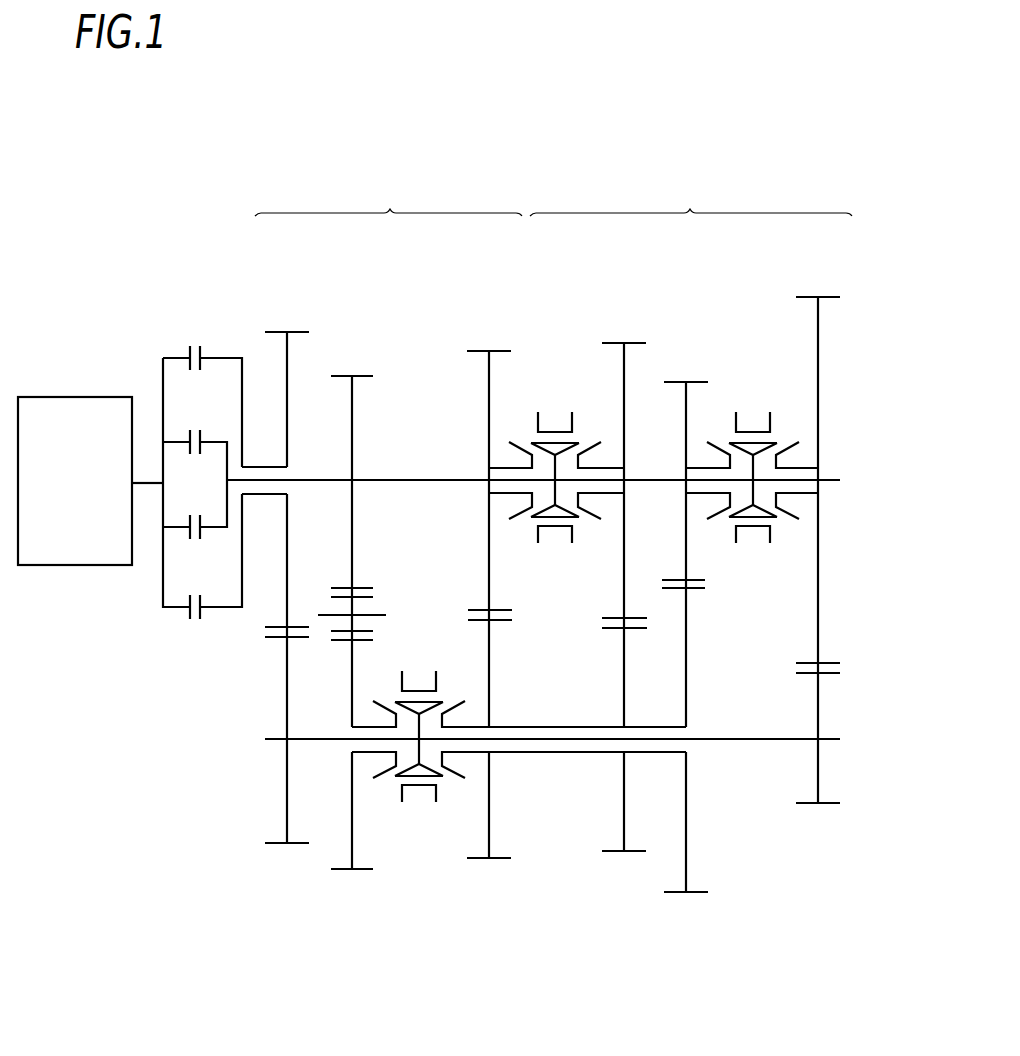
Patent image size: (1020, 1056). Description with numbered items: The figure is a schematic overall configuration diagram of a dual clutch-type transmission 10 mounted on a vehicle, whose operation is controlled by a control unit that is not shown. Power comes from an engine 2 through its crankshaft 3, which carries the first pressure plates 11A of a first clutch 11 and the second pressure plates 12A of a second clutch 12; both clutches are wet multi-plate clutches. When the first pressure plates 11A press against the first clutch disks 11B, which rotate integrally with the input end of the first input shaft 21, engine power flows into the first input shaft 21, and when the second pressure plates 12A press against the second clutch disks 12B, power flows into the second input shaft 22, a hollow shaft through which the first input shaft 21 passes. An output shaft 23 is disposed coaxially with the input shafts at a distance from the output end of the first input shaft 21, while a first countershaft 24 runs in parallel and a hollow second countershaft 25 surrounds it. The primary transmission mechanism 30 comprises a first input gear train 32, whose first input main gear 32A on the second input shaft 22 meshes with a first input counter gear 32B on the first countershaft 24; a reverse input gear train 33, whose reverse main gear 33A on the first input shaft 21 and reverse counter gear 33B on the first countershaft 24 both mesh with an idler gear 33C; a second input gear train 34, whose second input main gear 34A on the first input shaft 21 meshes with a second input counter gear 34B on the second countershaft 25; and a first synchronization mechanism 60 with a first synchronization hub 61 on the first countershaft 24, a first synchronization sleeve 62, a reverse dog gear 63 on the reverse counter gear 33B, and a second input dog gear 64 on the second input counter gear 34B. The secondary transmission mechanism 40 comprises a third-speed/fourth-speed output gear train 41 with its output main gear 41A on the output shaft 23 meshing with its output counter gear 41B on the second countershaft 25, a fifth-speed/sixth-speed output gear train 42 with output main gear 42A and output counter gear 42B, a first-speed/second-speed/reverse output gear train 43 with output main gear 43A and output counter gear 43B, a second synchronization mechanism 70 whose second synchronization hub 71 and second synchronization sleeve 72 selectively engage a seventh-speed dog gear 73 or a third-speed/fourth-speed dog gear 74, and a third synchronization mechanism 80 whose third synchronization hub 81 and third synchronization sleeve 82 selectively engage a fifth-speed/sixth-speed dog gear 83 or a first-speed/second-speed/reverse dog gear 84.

The dual clutch-type transmission 10 is at (546, 131).
The engine 2 is at (75, 481).
The crankshaft 3 is at (148, 478).
The first clutch 11 is at (199, 477).
The first pressure plates 11A is at (190, 449).
The first clutch disks 11B is at (201, 533).
The second clutch 12 is at (193, 461).
The second pressure plates 12A is at (188, 612).
The second clutch disks 12B is at (205, 613).
The first input shaft 21 is at (422, 483).
The second input shaft 22 is at (258, 466).
The output shaft 23 is at (650, 483).
The first countershaft 24 is at (738, 737).
The second countershaft 25 is at (543, 725).
The primary transmission mechanism 30 is at (388, 198).
The first input gear train 32 is at (277, 555).
The first input main gear 32A is at (288, 418).
The first input counter gear 32B is at (286, 777).
The reverse input gear train 33 is at (367, 591).
The reverse main gear 33A is at (352, 445).
The reverse counter gear 33B is at (347, 670).
The idler gear 33C is at (365, 592).
The second input gear train 34 is at (491, 574).
The second input main gear 34A is at (489, 416).
The second input counter gear 34B is at (490, 795).
The secondary transmission mechanism 40 is at (691, 198).
The third-speed/fourth-speed output gear train 41 is at (607, 565).
The third-speed/fourth-speed output main gear 41A is at (624, 393).
The third-speed/fourth-speed output counter gear 41B is at (624, 775).
The fifth-speed/sixth-speed output gear train 42 is at (691, 605).
The fifth-speed/sixth-speed output main gear 42A is at (686, 433).
The fifth-speed/sixth-speed output counter gear 42B is at (687, 820).
The first-speed/second-speed/reverse output gear train 43 is at (795, 515).
The first-speed/second-speed/reverse output main gear 43A is at (817, 351).
The first-speed/second-speed/reverse output counter gear 43B is at (817, 757).
The first synchronization mechanism 60 is at (420, 731).
The first synchronization hub 61 is at (424, 708).
The first synchronization sleeve 62 is at (418, 790).
The reverse dog gear 63 is at (388, 777).
The second input dog gear 64 is at (446, 780).
The second synchronization mechanism 70 is at (556, 469).
The second synchronization hub 71 is at (560, 461).
The second synchronization sleeve 72 is at (553, 546).
The seventh-speed dog gear 73 is at (521, 525).
The third-speed/fourth-speed dog gear 74 is at (585, 525).
The third synchronization mechanism 80 is at (752, 473).
The third synchronization hub 81 is at (758, 458).
The third synchronization sleeve 82 is at (752, 548).
The fifth-speed/sixth-speed dog gear 83 is at (720, 527).
The first-speed/second-speed/reverse dog gear 84 is at (783, 525).